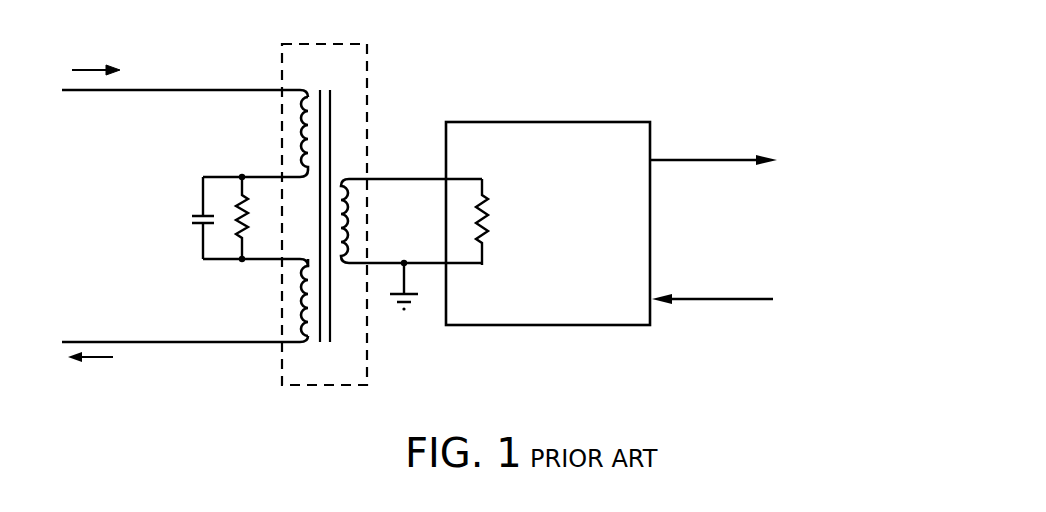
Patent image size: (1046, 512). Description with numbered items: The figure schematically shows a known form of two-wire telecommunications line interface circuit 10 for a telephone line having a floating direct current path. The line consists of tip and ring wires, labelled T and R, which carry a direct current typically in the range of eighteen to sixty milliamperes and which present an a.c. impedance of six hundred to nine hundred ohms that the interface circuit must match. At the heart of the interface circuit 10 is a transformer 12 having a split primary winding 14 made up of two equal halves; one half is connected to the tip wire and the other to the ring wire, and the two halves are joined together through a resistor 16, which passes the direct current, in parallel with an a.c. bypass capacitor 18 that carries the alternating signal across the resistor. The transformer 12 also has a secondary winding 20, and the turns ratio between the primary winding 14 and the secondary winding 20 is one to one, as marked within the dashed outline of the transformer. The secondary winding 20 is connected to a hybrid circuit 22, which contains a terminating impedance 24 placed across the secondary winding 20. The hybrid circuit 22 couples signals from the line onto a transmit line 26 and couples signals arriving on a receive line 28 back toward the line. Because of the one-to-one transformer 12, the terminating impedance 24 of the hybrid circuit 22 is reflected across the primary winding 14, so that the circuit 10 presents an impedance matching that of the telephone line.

The interface circuit 10 is at (480, 70).
The transformer 12 is at (308, 44).
The split primary winding 14 is at (297, 130).
The resistor 16 is at (243, 232).
The a.c. bypass capacitor 18 is at (188, 217).
The secondary winding 20 is at (356, 200).
The hybrid circuit 22 is at (560, 122).
The terminating impedance 24 is at (484, 214).
The transmit line 26 is at (697, 160).
The receive line 28 is at (698, 300).